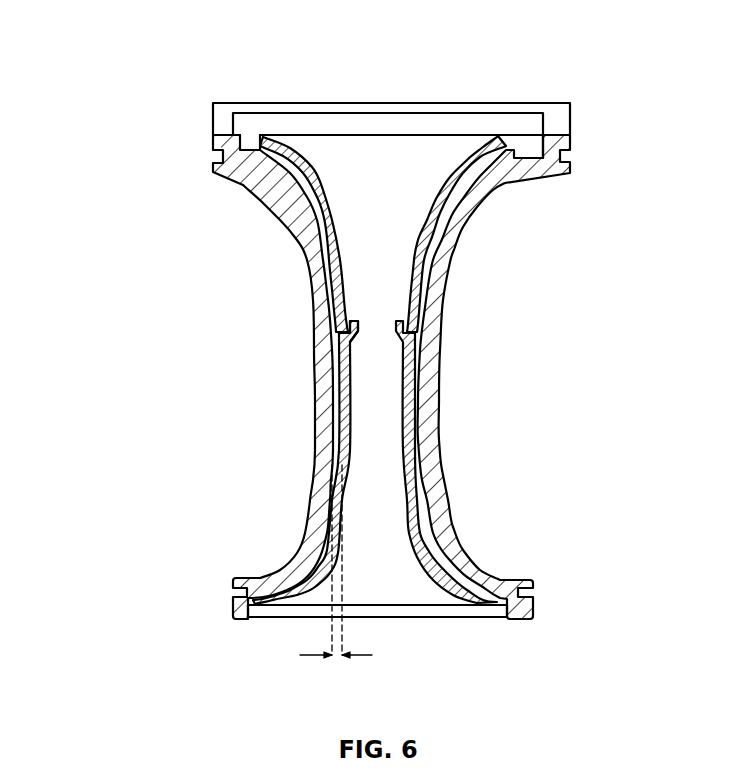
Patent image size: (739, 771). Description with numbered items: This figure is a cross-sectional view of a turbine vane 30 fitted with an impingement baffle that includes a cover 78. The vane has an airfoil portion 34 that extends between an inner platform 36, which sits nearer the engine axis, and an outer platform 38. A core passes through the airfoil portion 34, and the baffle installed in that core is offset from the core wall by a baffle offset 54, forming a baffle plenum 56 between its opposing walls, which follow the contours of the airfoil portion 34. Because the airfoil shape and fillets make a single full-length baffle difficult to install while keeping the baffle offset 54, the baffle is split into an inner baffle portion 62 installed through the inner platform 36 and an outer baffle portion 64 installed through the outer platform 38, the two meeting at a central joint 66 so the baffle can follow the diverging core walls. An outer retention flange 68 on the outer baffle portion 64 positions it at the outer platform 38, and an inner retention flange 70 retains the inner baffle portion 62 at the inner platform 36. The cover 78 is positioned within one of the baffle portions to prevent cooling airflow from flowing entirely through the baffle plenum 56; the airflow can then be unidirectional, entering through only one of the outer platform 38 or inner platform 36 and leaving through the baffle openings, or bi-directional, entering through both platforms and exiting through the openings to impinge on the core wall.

The turbine vane 30 is at (130, 50).
The airfoil portion 34 is at (438, 380).
The inner platform 36 is at (236, 585).
The outer platform 38 is at (218, 168).
The baffle offset 54 is at (325, 655).
The baffle plenum 56 is at (362, 236).
The inner baffle portion 62 is at (412, 490).
The outer baffle portion 64 is at (324, 228).
The central joint 66 is at (338, 340).
The outer retention flange 68 is at (270, 136).
The inner retention flange 70 is at (294, 592).
The cover 78 is at (272, 619).